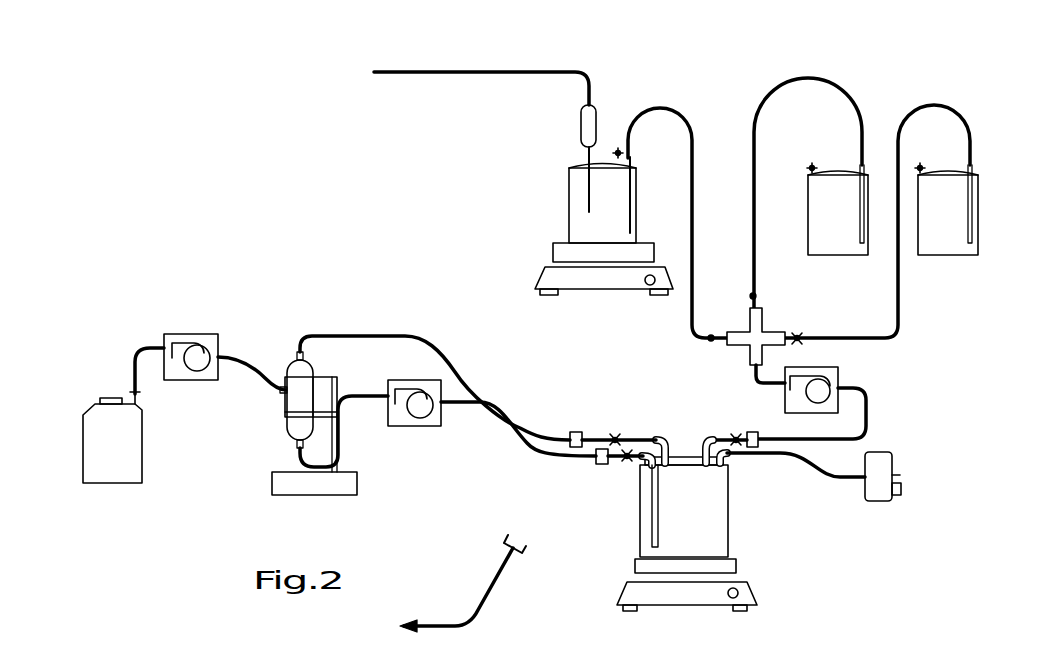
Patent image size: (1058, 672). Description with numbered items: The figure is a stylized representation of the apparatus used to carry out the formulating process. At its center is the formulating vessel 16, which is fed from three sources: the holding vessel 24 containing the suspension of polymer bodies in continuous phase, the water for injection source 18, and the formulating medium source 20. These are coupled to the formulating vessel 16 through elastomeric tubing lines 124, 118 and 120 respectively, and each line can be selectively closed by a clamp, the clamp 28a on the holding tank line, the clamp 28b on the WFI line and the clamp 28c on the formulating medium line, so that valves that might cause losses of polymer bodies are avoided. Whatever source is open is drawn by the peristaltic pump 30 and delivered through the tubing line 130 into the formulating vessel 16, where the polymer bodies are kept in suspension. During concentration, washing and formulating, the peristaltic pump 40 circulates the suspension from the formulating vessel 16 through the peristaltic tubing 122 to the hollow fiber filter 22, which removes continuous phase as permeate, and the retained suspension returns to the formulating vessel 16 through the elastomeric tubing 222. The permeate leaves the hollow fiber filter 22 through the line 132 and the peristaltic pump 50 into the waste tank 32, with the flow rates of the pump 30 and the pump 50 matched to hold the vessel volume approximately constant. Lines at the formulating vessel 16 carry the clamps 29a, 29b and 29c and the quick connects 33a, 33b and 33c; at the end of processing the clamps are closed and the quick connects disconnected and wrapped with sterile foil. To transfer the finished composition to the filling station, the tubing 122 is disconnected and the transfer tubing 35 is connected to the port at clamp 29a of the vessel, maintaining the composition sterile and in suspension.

The formulating vessel 16 is at (677, 528).
The water for injection source 18 is at (828, 202).
The formulating medium source 20 is at (940, 233).
The hollow fiber filter 22 is at (296, 402).
The holding vessel 24 is at (585, 225).
The clamp 28a is at (712, 339).
The clamp 28b is at (757, 296).
The clamp 28c is at (797, 334).
The clamp 29a is at (627, 462).
The clamp 29b is at (616, 437).
The clamp 29c is at (736, 434).
The peristaltic pump 30 is at (830, 370).
The waste tank 32 is at (97, 423).
The quick connect 33a is at (752, 432).
The quick connect 33b is at (602, 466).
The quick connect 33c is at (575, 430).
The transfer tubing 35 is at (498, 578).
The peristaltic pump 40 is at (422, 380).
The peristaltic pump 50 is at (188, 340).
The elastomeric tubing line 118 is at (797, 78).
The elastomeric tubing line 120 is at (934, 105).
The peristaltic tubing 122 is at (358, 405).
The elastomeric tubing line 124 is at (672, 107).
The tubing line 130 is at (866, 408).
The line 132 is at (245, 368).
The elastomeric tubing 222 is at (362, 333).